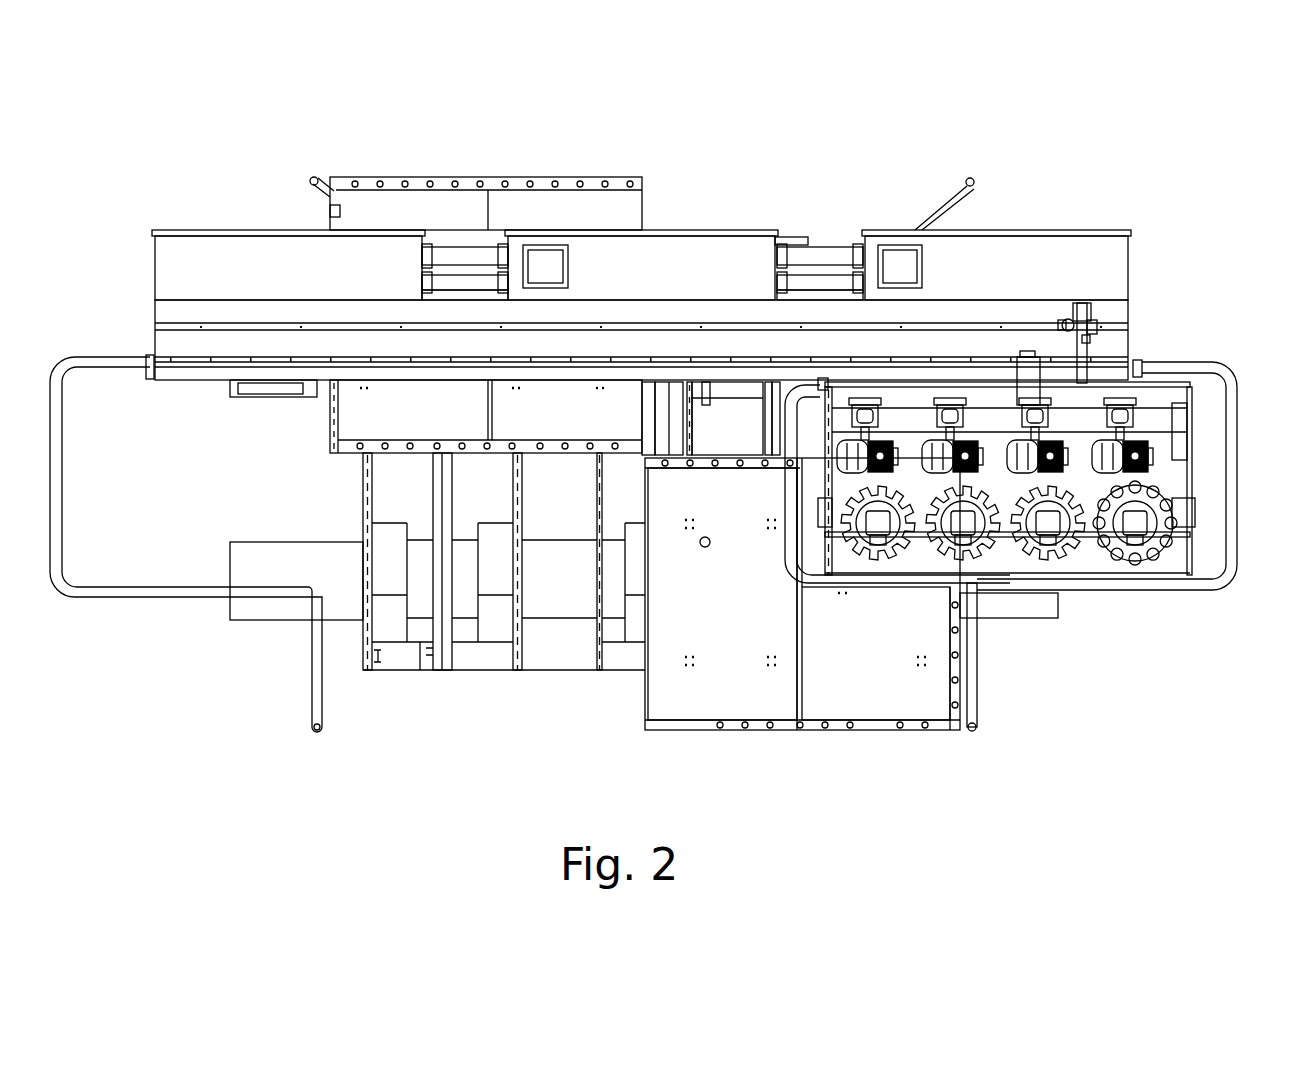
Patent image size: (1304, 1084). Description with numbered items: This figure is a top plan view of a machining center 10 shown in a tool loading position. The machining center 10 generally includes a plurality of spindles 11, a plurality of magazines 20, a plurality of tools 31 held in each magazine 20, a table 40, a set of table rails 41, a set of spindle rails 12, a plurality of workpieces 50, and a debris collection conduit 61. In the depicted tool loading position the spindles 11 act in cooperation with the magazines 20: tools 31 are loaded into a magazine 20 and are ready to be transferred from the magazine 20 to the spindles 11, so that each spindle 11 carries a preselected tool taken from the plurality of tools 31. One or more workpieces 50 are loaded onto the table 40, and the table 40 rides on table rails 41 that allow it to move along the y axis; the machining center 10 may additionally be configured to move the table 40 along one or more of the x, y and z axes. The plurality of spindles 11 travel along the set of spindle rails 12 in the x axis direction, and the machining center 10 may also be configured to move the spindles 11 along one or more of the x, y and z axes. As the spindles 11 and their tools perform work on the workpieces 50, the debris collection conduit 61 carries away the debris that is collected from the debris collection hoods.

The machining center 10 is at (1027, 185).
The spindle 11 is at (1150, 463).
The spindle rail 12 is at (155, 360).
The magazine 20 is at (1075, 560).
The tool 31 is at (1135, 560).
The table 40 is at (545, 650).
The table rail 41 is at (370, 658).
The workpiece 50 is at (363, 412).
The debris collection conduit 61 is at (1030, 405).